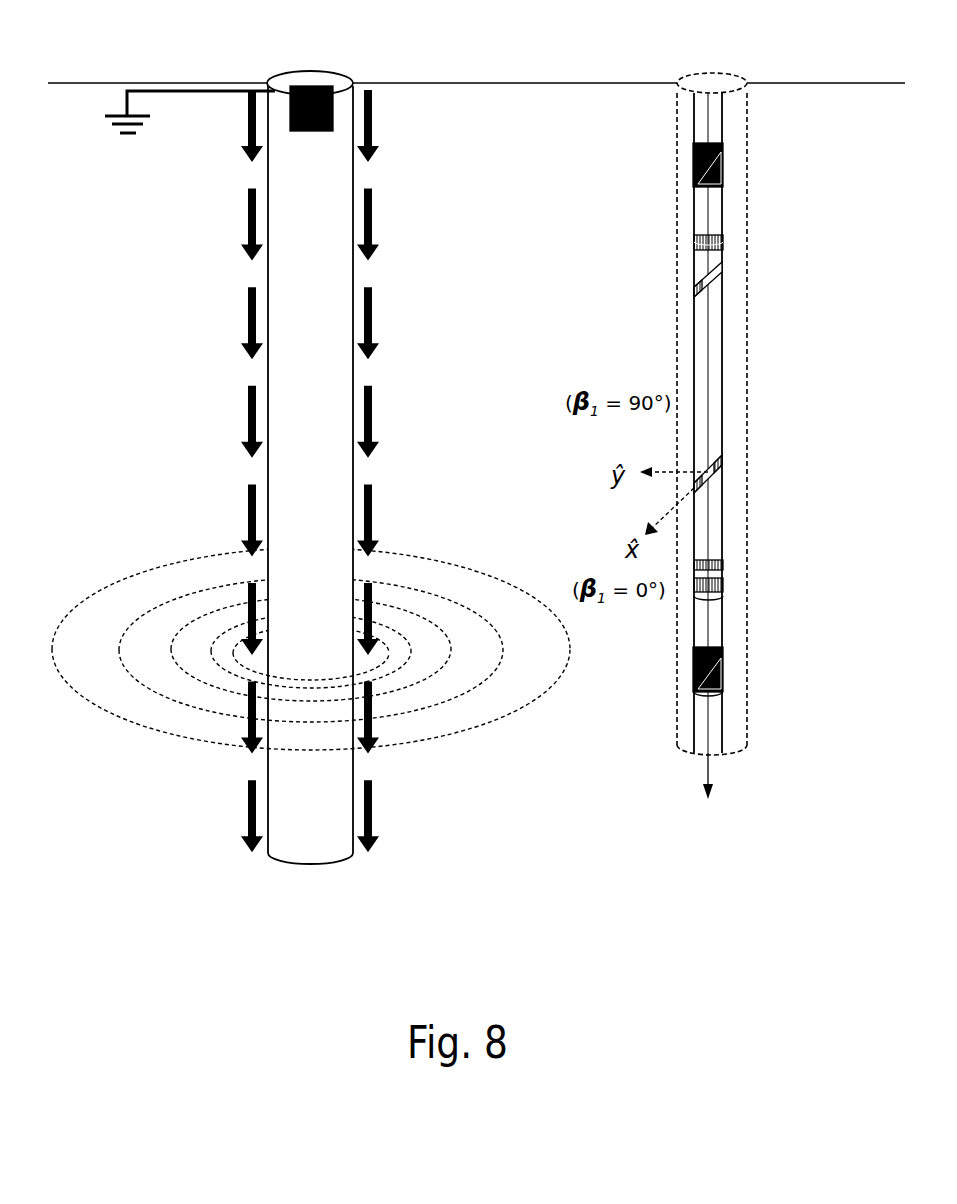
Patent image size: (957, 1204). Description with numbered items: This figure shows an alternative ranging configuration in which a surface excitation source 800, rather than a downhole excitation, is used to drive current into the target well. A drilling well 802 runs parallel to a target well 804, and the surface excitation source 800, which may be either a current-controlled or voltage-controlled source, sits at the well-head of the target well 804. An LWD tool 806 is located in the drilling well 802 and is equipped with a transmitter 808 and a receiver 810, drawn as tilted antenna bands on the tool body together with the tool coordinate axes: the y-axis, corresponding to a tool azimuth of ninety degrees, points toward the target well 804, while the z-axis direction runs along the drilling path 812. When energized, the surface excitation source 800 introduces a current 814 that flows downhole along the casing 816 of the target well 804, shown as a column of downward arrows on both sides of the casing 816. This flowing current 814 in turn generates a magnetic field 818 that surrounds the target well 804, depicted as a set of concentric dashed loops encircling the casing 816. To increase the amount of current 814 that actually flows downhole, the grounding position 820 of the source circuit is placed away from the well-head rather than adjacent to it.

The surface excitation source 800 is at (300, 86).
The drilling well 802 is at (718, 80).
The target well 804 is at (315, 80).
The LWD tool 806 is at (733, 347).
The transmitter 808 is at (694, 297).
The receiver 810 is at (722, 462).
The drilling path 812 is at (720, 833).
The current 814 is at (248, 412).
The casing 816 is at (335, 862).
The magnetic field 818 is at (186, 553).
The grounding position 820 is at (128, 136).